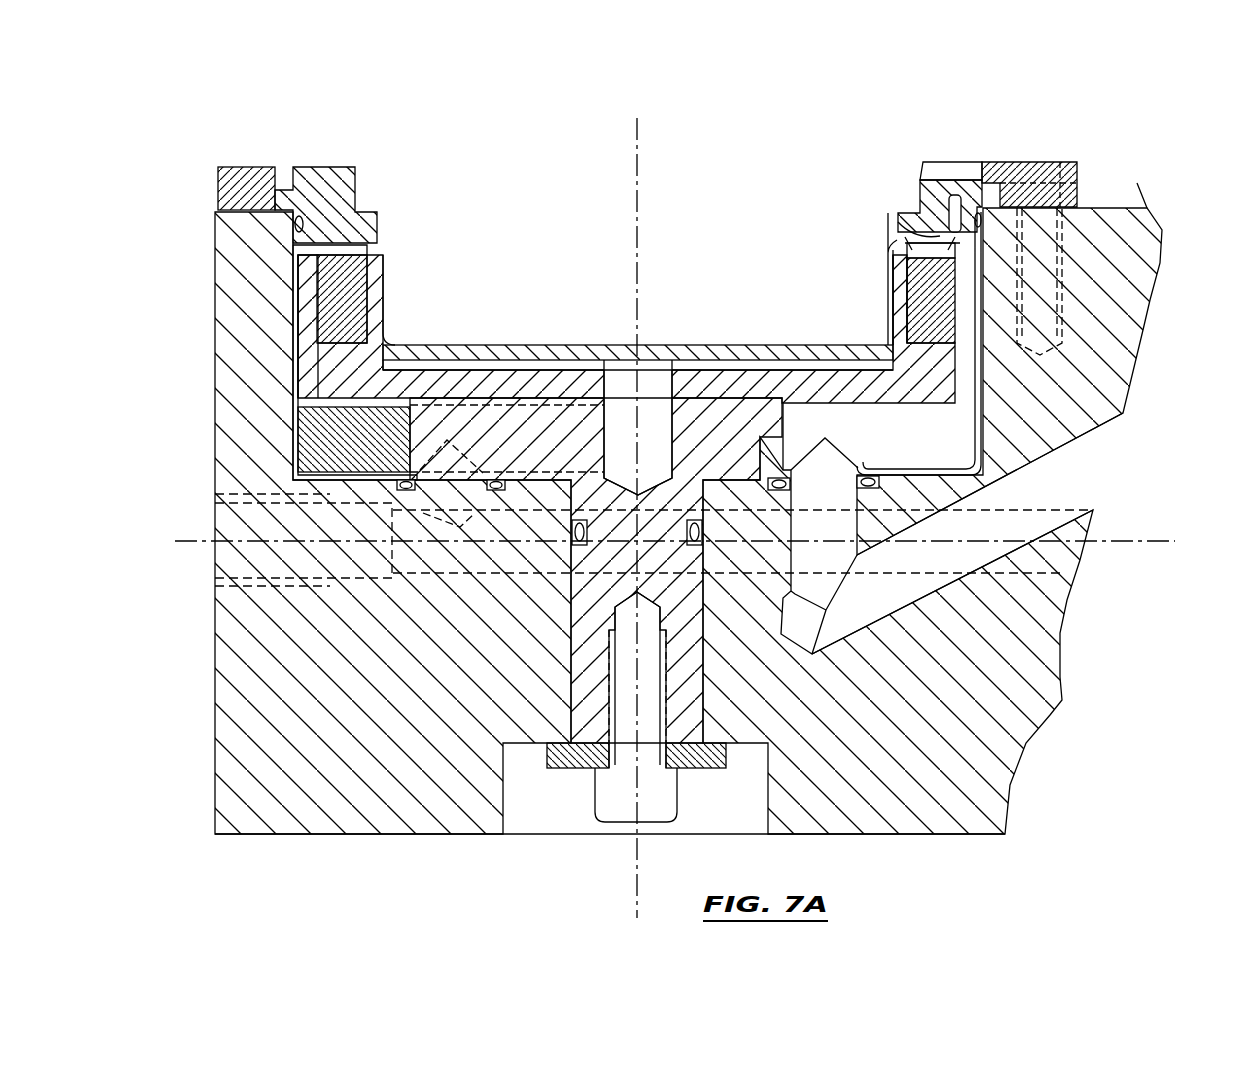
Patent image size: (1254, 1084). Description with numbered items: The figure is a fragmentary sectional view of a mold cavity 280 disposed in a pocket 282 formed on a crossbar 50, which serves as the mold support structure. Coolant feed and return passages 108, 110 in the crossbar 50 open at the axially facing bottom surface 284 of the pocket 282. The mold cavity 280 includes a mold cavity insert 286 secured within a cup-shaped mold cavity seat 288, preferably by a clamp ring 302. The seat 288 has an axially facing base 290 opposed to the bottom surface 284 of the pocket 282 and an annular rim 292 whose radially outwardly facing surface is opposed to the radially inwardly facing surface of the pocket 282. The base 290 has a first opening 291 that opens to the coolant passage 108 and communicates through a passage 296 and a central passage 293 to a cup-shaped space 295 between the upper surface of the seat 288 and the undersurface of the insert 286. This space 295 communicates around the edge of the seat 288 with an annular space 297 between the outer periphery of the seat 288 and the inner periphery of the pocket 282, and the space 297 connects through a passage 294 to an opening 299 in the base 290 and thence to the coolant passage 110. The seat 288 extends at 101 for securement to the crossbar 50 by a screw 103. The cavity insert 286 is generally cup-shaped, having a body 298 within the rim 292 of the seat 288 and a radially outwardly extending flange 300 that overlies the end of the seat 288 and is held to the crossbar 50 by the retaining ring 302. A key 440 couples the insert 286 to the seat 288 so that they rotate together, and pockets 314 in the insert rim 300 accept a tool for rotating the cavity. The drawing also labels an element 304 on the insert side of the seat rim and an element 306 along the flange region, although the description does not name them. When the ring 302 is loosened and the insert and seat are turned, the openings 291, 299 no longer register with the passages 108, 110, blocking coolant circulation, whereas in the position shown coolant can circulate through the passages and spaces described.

The crossbar 50 is at (1053, 617).
The seat extension 101 is at (583, 728).
The screw 103 is at (648, 802).
The coolant passage 108 is at (1050, 573).
The coolant passage 110 is at (1095, 507).
The mold cavity 280 is at (790, 150).
The pocket 282 is at (970, 357).
The bottom surface 284 is at (935, 469).
The mold cavity insert 286 is at (950, 164).
The mold cavity seat 288 is at (284, 355).
The base 290 is at (698, 407).
The first opening 291 is at (417, 480).
The annular rim 292 is at (963, 312).
The central passage 293 is at (672, 417).
The passage 294 is at (896, 432).
The cup-shaped space 295 is at (510, 365).
The passage 296 is at (567, 365).
The annular space 297 is at (307, 402).
The body 298 is at (377, 285).
The opening 299 is at (848, 468).
The flange 300 is at (325, 193).
The clamp ring 302 is at (1043, 170).
The stud 304 is at (907, 302).
The plate 306 is at (438, 348).
The pockets 314 is at (963, 170).
The key 440 is at (900, 237).